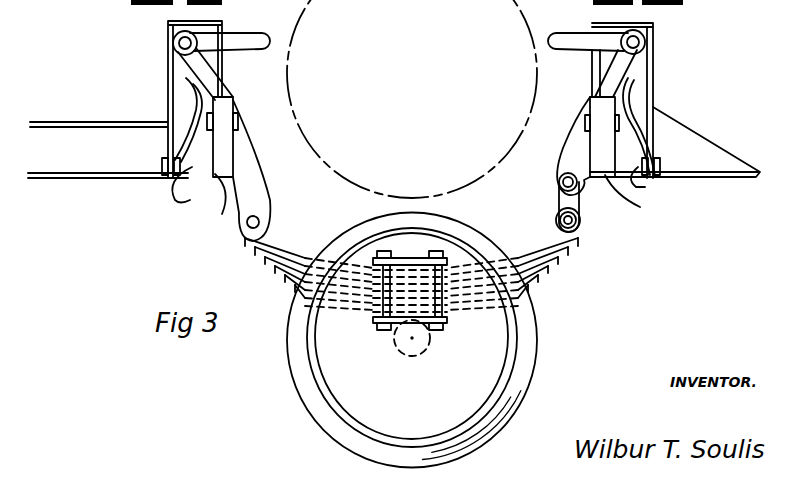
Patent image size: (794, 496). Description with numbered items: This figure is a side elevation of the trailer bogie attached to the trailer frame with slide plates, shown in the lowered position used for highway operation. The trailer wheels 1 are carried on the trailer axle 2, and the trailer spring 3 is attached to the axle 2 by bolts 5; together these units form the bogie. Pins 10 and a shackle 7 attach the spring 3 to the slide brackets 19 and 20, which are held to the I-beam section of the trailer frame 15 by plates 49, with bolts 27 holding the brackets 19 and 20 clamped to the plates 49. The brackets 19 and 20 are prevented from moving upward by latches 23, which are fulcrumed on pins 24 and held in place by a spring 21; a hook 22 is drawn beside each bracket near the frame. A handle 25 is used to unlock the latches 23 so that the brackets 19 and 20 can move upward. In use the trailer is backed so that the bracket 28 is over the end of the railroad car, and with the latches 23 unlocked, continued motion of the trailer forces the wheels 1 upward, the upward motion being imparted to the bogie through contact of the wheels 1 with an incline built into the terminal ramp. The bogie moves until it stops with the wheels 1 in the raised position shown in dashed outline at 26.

The trailer wheels 1 is at (525, 362).
The trailer axle 2 is at (422, 348).
The trailer spring 3 is at (537, 272).
The bolts 5 is at (450, 289).
The shackle 7 is at (567, 202).
The pins 10 is at (258, 220).
The trailer frame 15 is at (135, 167).
The slide bracket 19 is at (250, 175).
The slide bracket 20 is at (570, 147).
The spring 21 is at (187, 118).
The hook 22 is at (678, 190).
The latches 23 is at (195, 63).
The pins 24 is at (177, 42).
The handle 25 is at (238, 34).
The raised wheel position 26 is at (303, 143).
The bolts 27 is at (235, 118).
The bracket 28 is at (707, 162).
The plates 49 is at (436, 205).